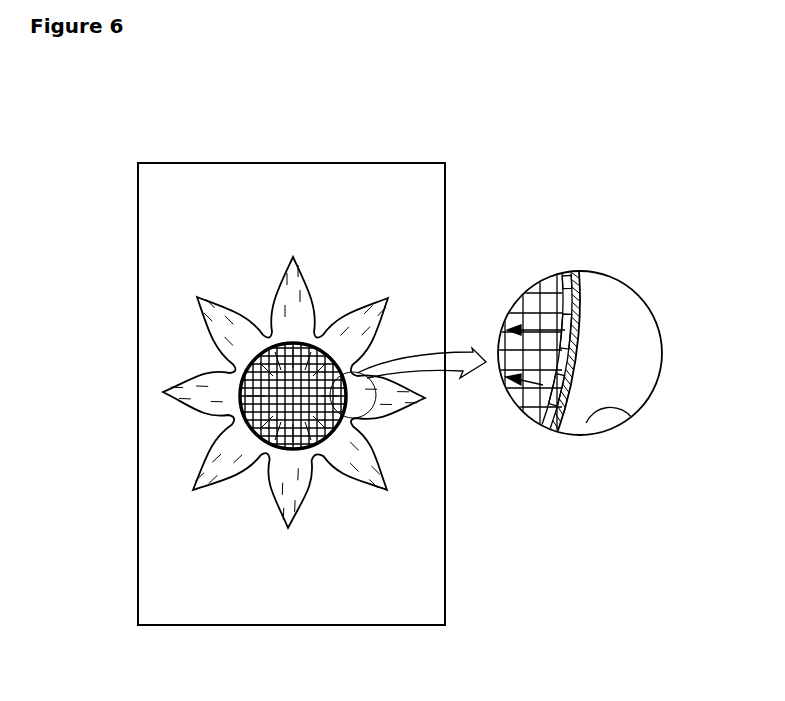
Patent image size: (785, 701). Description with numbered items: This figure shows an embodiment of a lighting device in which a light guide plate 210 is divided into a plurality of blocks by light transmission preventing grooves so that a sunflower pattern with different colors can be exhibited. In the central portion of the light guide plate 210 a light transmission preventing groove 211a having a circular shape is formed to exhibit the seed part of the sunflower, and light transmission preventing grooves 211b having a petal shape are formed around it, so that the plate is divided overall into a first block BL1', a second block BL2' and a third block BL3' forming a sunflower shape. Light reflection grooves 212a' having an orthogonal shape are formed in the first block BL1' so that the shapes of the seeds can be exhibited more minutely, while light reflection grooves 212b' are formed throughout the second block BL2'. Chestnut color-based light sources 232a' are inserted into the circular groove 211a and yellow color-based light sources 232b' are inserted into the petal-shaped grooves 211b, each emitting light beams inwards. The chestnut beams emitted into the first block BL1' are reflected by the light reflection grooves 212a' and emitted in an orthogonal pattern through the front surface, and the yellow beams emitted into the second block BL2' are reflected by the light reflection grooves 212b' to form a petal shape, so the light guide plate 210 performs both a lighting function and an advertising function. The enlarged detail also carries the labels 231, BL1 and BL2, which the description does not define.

The light guide plate 210 is at (352, 138).
The light transmission preventing groove having a circular shape 211a is at (190, 364).
The light transmission preventing grooves having a petal shape 211b is at (237, 307).
The light reflection grooves having an orthogonal shape 212a' is at (371, 568).
The light reflection grooves 212b' is at (134, 306).
The mesh electrode region 231 is at (580, 367).
The chestnut color-based light sources 232a' is at (601, 303).
The yellow color-based light sources 232b' is at (457, 469).
The first boundary line BL1 is at (543, 329).
The second boundary line BL2 is at (623, 353).
The first block BL1' is at (235, 562).
The second block BL2' is at (142, 450).
The third block BL3' is at (91, 215).